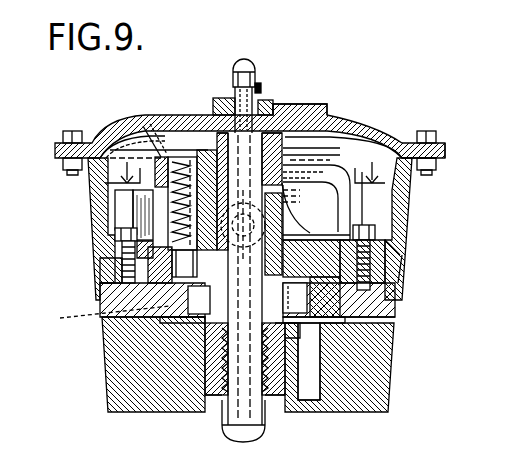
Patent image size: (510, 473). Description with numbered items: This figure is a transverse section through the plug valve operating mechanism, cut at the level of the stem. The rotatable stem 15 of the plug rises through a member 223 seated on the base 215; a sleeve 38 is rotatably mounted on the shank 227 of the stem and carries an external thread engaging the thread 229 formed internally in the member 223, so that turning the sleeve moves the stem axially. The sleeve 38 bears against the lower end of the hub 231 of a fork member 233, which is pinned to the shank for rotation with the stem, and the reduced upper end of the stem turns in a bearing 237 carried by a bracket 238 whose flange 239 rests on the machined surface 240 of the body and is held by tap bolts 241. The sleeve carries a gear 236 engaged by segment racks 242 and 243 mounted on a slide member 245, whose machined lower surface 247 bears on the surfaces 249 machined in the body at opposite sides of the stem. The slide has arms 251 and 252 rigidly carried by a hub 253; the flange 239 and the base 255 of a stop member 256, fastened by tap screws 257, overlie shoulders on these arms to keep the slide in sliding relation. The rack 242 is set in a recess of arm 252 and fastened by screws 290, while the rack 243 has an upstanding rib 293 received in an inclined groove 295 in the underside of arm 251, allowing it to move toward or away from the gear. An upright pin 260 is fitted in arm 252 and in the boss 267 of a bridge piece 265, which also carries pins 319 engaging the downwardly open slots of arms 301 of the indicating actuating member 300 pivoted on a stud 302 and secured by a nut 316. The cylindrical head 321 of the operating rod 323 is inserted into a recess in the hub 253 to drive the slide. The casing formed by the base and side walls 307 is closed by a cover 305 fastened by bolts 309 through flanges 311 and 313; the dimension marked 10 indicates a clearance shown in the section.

The gap dimension 10 is at (249, 172).
The stem 15 is at (252, 428).
The sleeve 38 is at (264, 318).
The base 215 is at (392, 360).
The member 223 is at (305, 368).
The shank 227 is at (240, 382).
The thread 229 is at (210, 362).
The hub 231 is at (185, 263).
The fork member 233 is at (212, 200).
The gear 236 is at (153, 364).
The bearing 237 is at (274, 160).
The bracket 238 is at (322, 142).
The flange 239 is at (392, 259).
The machined surface 240 is at (399, 283).
The tap bolts 241 is at (376, 234).
The rack 242 is at (150, 301).
The rack 243 is at (392, 312).
The slide member 245 is at (305, 227).
The machined lower surface 247 is at (300, 326).
The surfaces 249 is at (200, 320).
The arm 251 is at (316, 232).
The arm 252 is at (112, 276).
The hub 253 is at (320, 232).
The base 255 is at (118, 258).
The stop member 256 is at (125, 222).
The tap screws 257 is at (118, 238).
The upright pin 260 is at (182, 203).
The bridge piece 265 is at (108, 140).
The boss 267 is at (138, 132).
The screws 290 is at (98, 315).
The rib 293 is at (312, 297).
The inclined groove 295 is at (311, 258).
The actuating member 300 is at (280, 110).
The arms 301 is at (212, 108).
The stud 302 is at (262, 88).
The cover 305 is at (372, 128).
The side walls 307 is at (92, 211).
The tap bolts 309 is at (72, 131).
The flange 311 is at (446, 148).
The flange 313 is at (437, 163).
The nut 316 is at (243, 60).
The pins 319 is at (150, 124).
The cylindrical head 321 is at (297, 207).
The operating rod 323 is at (218, 214).